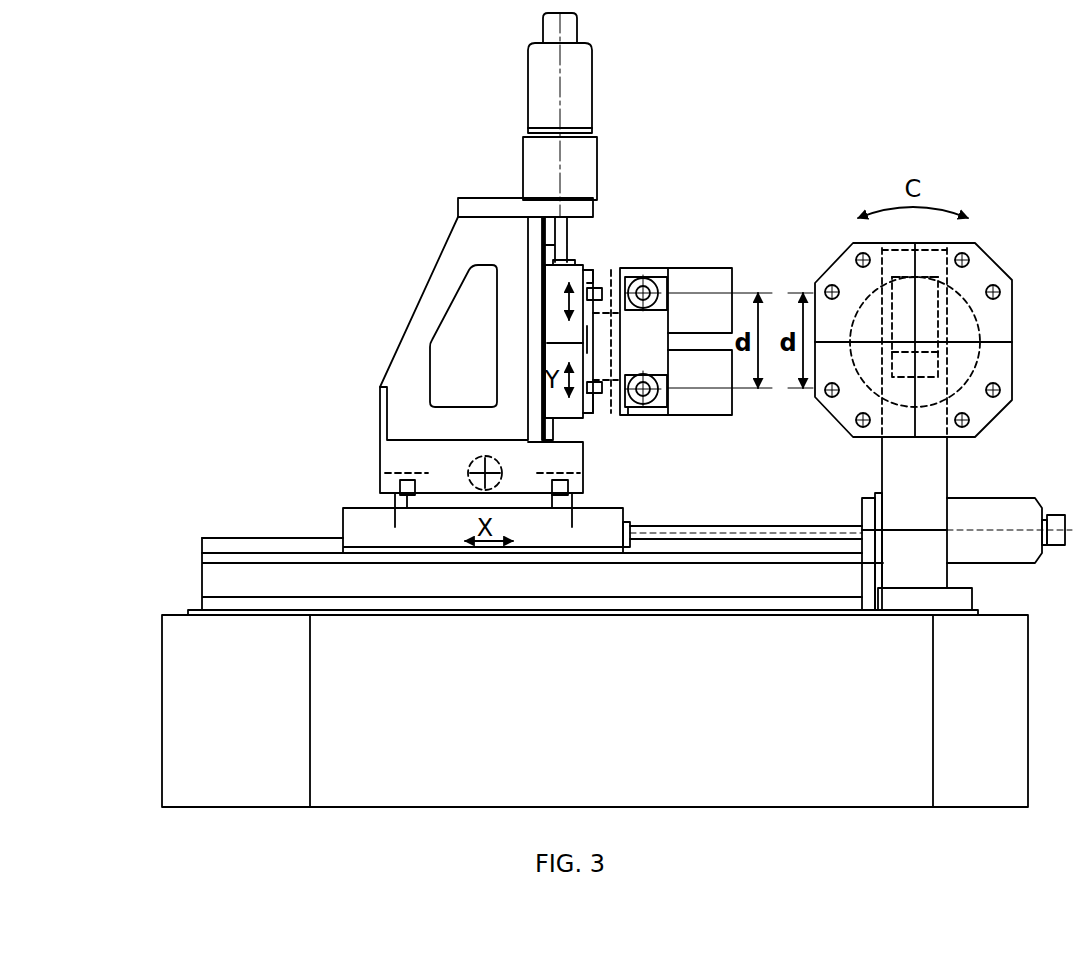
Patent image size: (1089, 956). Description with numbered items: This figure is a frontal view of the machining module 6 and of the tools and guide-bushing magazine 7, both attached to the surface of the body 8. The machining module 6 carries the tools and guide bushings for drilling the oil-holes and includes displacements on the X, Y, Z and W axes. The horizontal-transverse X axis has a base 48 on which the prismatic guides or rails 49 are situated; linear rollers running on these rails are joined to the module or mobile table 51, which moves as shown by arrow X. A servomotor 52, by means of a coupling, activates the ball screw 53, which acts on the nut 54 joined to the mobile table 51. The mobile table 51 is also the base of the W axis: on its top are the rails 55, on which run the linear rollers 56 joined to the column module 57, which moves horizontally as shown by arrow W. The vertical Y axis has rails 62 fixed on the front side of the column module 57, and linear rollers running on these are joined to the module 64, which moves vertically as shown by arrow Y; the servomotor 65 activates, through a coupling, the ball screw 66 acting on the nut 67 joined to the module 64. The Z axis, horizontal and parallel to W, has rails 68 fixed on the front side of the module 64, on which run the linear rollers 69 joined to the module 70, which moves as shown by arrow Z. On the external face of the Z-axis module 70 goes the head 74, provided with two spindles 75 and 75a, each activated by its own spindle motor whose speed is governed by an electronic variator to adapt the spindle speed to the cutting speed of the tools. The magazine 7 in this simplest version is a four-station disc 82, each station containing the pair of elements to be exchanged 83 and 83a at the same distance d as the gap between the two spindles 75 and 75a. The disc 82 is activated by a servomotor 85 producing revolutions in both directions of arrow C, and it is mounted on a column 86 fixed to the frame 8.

The machining module 6 is at (398, 157).
The tools and guide-bushing magazine 7 is at (1022, 205).
The body 8 is at (248, 775).
The base 48 is at (230, 578).
The prismatic guides or rails 49 is at (222, 547).
The mobile table 51 is at (367, 533).
The servomotor 52 is at (992, 542).
The ball screw 53 is at (735, 527).
The nut 54 is at (630, 520).
The rails 55 is at (407, 495).
The linear rollers 56 is at (395, 473).
The column module 57 is at (410, 367).
The rails 62 is at (548, 428).
The module 64 is at (590, 277).
The servomotor 65 is at (578, 92).
The ball screw 66 is at (563, 228).
The nut 67 is at (562, 283).
The rails 68 is at (583, 295).
The linear rollers 69 is at (605, 375).
The module 70 is at (625, 272).
The head 74 is at (645, 357).
The spindle 75 is at (667, 282).
The spindle 75a is at (650, 395).
The 4-station disc 82 is at (843, 272).
The element to be exchanged 83 is at (818, 288).
The element to be exchanged 83a is at (828, 390).
The servomotor 85 is at (927, 307).
The column 86 is at (932, 465).